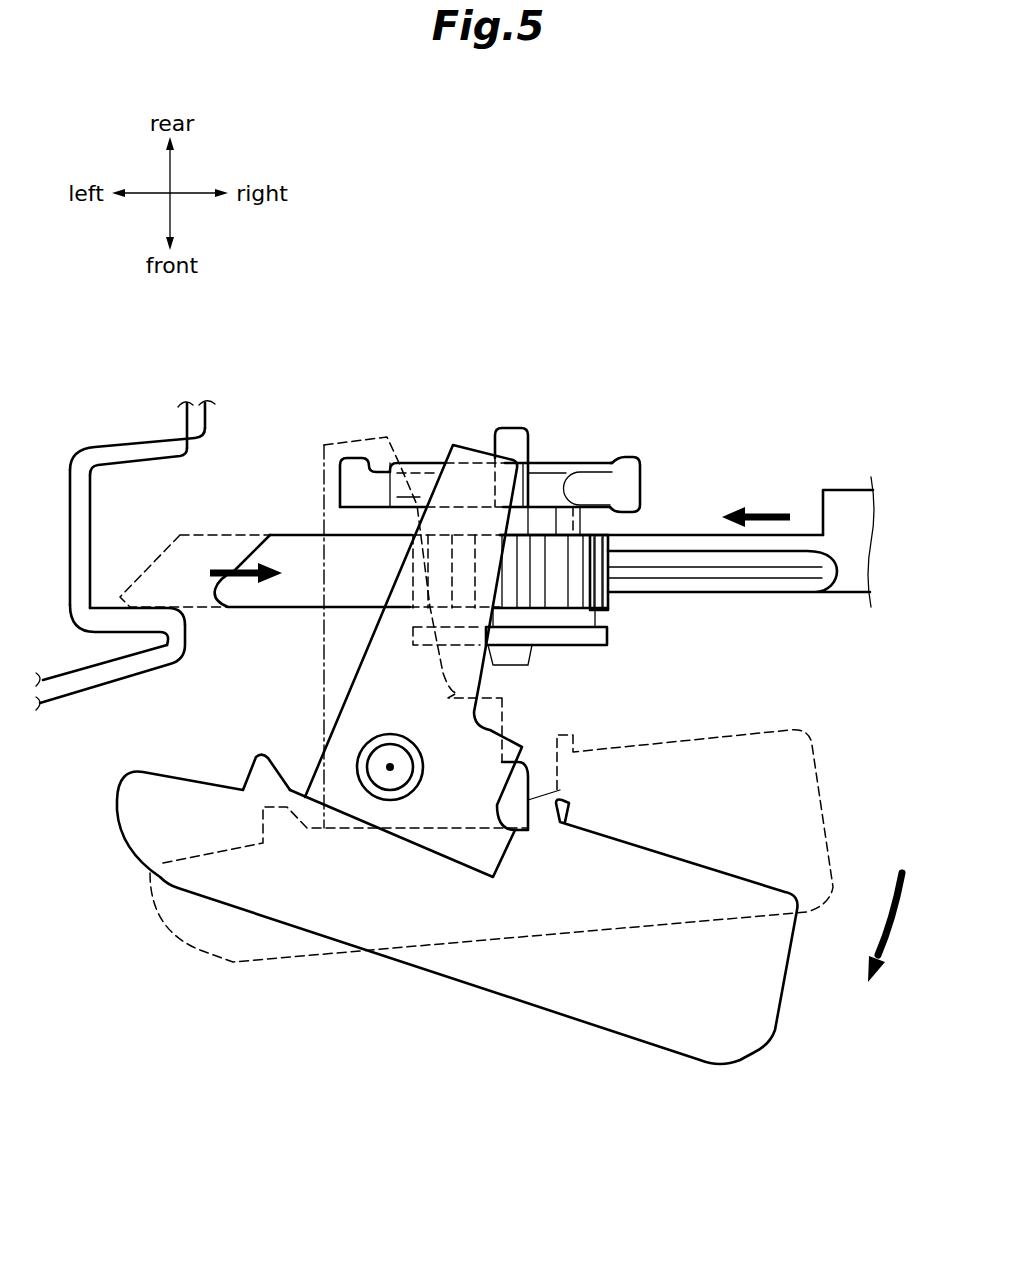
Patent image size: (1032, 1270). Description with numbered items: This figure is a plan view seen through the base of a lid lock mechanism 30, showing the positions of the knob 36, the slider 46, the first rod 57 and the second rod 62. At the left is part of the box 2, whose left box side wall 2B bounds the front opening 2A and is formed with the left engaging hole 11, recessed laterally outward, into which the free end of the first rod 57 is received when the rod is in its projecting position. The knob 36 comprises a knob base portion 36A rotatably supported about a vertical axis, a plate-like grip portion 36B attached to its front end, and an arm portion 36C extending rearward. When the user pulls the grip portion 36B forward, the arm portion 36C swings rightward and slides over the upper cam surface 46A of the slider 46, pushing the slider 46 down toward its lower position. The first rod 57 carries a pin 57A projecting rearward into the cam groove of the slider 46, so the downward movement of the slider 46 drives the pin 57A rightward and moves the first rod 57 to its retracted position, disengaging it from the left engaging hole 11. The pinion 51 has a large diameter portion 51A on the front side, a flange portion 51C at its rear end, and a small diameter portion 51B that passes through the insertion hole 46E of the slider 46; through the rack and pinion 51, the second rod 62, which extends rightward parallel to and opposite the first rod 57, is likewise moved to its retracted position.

The box 2 is at (137, 430).
The front opening 2A is at (190, 647).
The box side wall 2B is at (207, 420).
The left engaging hole 11 is at (85, 513).
The lock device 30 is at (352, 1033).
The knob 36 is at (633, 1050).
The knob base portion 36A is at (457, 843).
The grip portion 36B is at (550, 987).
The arm portion 36C is at (465, 453).
The slider 46 is at (648, 438).
The upper cam surface 46A is at (572, 470).
The insertion hole 46E is at (523, 477).
The pinion 51 is at (613, 660).
The large diameter portion 51A is at (608, 600).
The small diameter portion 51B is at (510, 438).
The flange portion 51C is at (570, 637).
The first rod 57 is at (308, 540).
The pin 57A is at (580, 519).
The second rod 62 is at (853, 590).